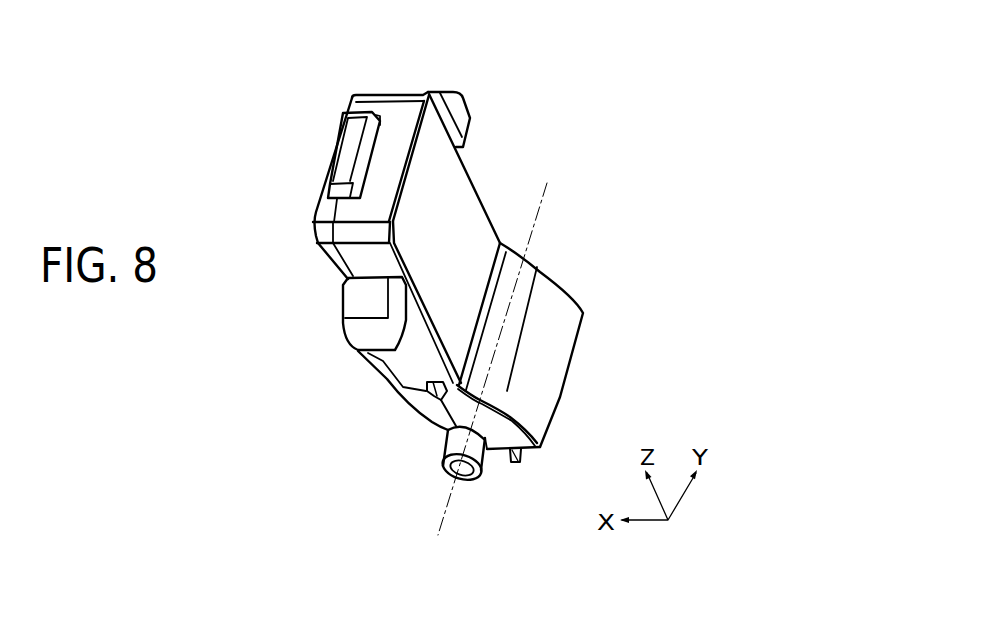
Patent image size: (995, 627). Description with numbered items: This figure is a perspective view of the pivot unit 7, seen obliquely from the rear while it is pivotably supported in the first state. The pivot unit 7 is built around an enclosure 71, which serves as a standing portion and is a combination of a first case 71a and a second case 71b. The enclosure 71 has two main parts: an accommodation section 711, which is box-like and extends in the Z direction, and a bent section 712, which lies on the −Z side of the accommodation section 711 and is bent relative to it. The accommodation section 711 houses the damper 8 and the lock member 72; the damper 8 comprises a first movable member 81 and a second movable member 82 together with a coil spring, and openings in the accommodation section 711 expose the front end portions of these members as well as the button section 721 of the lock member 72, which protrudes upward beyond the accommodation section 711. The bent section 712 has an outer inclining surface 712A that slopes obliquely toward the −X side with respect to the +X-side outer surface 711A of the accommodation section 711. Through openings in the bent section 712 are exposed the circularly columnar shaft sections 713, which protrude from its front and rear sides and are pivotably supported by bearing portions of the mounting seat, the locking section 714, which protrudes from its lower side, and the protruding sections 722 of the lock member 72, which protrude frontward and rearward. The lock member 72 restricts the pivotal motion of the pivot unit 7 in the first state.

The pivot unit 7 is at (600, 55).
The enclosure 71 is at (413, 50).
The first case 71a is at (363, 105).
The second case 71b is at (393, 105).
The lock member 72 is at (357, 256).
The button section 721 is at (343, 143).
The protruding sections 722 is at (427, 392).
The damper 8 is at (410, 221).
The first movable member 81 is at (465, 124).
The second movable member 82 is at (363, 294).
The accommodation section 711 is at (355, 254).
The +X-side outer surface 711A is at (380, 374).
The bent section 712 is at (500, 434).
The inclining surface 712A is at (412, 413).
The shaft sections 713 is at (455, 440).
The locking section 714 is at (520, 456).